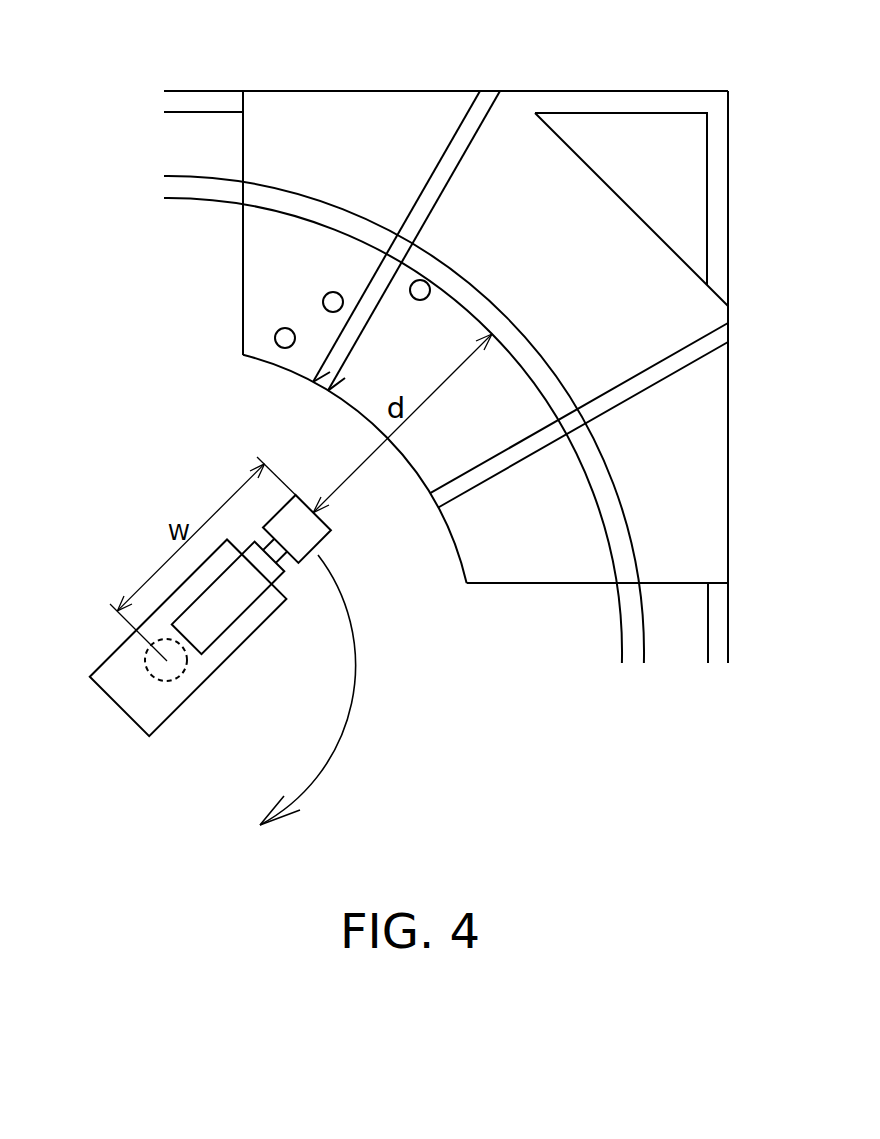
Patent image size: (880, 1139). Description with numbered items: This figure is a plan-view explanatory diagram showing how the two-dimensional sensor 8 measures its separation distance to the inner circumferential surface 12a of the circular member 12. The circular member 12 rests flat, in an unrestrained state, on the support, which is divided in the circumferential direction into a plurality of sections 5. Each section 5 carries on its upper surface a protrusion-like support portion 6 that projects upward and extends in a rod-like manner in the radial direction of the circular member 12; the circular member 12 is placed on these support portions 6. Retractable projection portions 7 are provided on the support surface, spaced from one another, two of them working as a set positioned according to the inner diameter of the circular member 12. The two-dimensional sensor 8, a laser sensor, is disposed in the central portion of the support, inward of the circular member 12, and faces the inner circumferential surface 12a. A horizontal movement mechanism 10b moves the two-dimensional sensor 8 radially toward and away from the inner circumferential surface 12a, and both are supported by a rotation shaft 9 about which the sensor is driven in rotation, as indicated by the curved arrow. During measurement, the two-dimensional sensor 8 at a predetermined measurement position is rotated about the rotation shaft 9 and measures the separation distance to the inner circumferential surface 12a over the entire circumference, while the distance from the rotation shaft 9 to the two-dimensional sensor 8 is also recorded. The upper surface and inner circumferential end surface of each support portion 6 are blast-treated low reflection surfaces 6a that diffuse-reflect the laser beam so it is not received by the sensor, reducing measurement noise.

The section 5 is at (342, 103).
The protrusion-like support portion 6 is at (437, 167).
The low reflection surface 6a is at (357, 325).
The projection portion 7 is at (281, 329).
The two-dimensional sensor 8 is at (328, 522).
The rotation shaft 9 is at (165, 681).
The horizontal movement mechanism 10b is at (220, 622).
The circular member 12 is at (538, 349).
The inner circumferential surface 12a is at (597, 518).